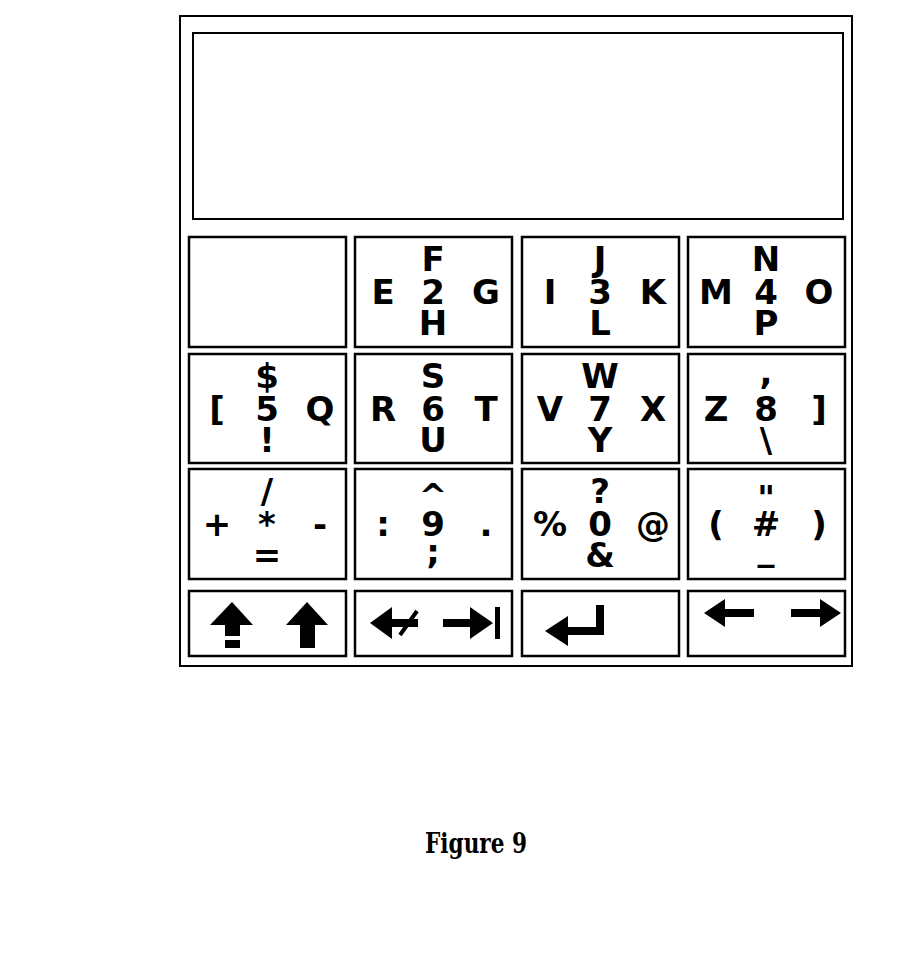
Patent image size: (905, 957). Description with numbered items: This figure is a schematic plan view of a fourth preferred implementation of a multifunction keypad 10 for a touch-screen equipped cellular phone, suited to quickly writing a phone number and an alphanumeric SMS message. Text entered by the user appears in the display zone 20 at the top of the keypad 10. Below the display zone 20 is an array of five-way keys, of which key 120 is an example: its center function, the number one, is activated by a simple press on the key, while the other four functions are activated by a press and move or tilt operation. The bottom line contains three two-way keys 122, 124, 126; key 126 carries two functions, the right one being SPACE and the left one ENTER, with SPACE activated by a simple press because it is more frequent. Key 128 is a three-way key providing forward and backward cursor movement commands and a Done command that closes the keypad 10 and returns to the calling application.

The handheld device / keyboard input apparatus 10 is at (174, 448).
The display zone 20 is at (182, 95).
The 5-way key 120 is at (180, 300).
The 2-way key 122 is at (242, 668).
The 2-way key 124 is at (413, 668).
The 2-way key 126 is at (588, 670).
The 3-way key 128 is at (771, 670).